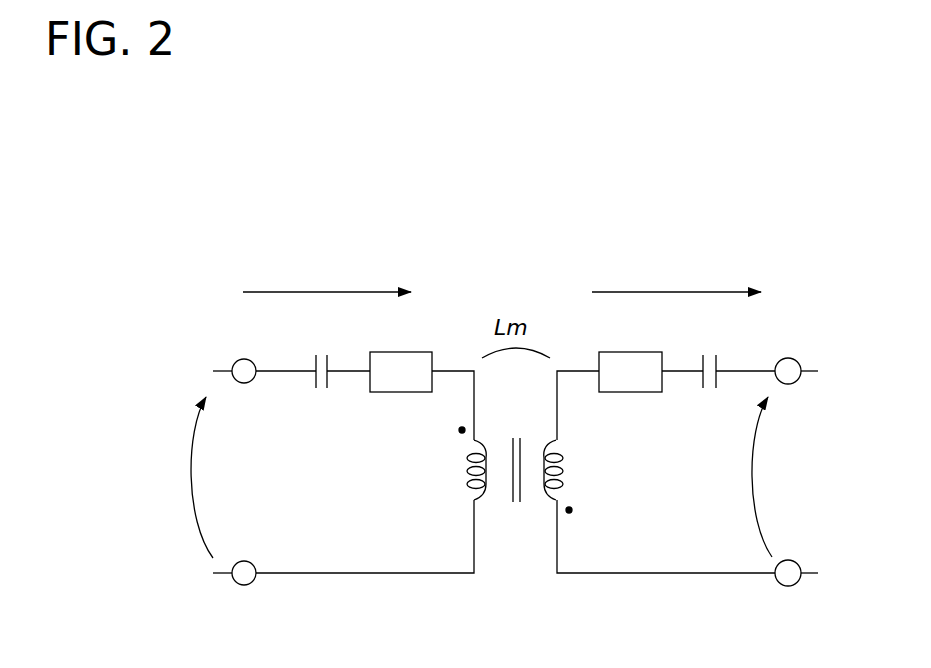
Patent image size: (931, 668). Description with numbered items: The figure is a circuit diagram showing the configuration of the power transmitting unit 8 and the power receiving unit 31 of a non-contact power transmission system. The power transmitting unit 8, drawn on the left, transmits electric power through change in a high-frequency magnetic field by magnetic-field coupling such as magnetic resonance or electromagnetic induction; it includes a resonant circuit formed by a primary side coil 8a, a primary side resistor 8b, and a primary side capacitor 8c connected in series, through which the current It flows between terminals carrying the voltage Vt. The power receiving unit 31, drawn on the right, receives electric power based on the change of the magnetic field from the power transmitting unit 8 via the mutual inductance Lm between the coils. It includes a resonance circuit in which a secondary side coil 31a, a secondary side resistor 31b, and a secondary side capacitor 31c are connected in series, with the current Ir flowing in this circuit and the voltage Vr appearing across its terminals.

The power transmitting unit 8 is at (186, 270).
The primary side coil 8a is at (478, 500).
The primary side resistor 8b is at (426, 352).
The primary side capacitor 8c is at (313, 360).
The power receiving unit 31 is at (785, 266).
The secondary side coil 31a is at (548, 500).
The secondary side resistor 31b is at (603, 352).
The secondary side capacitor 31c is at (719, 367).